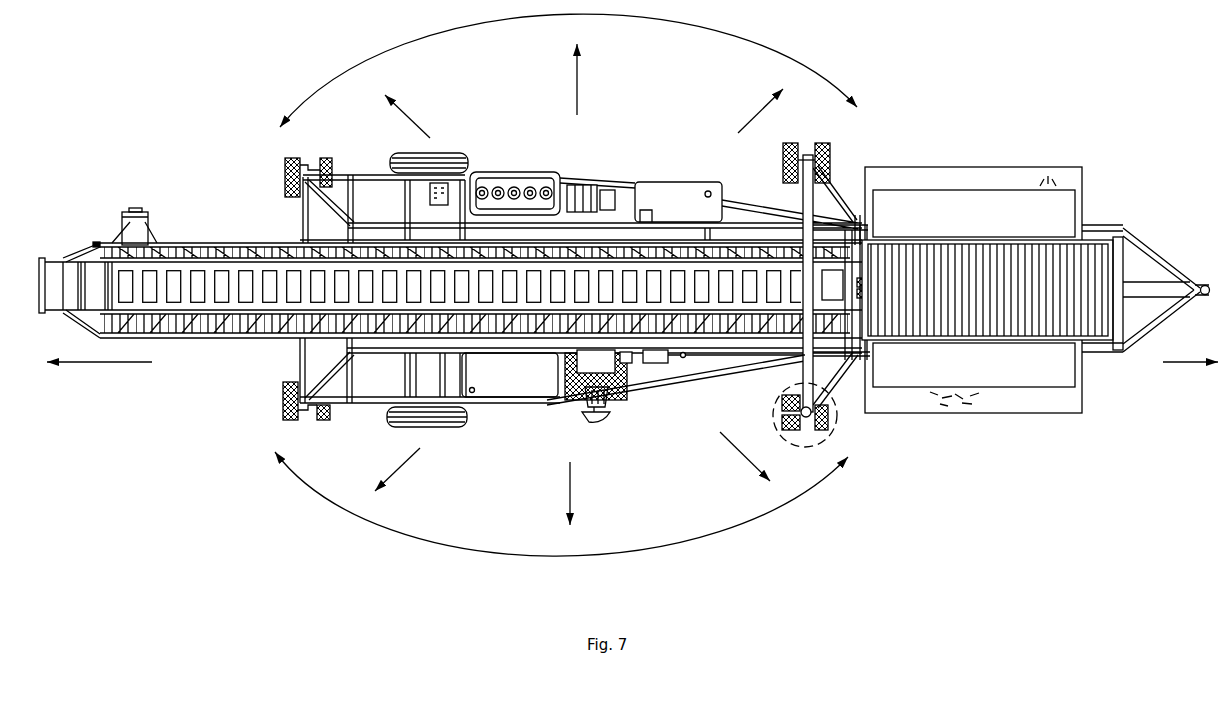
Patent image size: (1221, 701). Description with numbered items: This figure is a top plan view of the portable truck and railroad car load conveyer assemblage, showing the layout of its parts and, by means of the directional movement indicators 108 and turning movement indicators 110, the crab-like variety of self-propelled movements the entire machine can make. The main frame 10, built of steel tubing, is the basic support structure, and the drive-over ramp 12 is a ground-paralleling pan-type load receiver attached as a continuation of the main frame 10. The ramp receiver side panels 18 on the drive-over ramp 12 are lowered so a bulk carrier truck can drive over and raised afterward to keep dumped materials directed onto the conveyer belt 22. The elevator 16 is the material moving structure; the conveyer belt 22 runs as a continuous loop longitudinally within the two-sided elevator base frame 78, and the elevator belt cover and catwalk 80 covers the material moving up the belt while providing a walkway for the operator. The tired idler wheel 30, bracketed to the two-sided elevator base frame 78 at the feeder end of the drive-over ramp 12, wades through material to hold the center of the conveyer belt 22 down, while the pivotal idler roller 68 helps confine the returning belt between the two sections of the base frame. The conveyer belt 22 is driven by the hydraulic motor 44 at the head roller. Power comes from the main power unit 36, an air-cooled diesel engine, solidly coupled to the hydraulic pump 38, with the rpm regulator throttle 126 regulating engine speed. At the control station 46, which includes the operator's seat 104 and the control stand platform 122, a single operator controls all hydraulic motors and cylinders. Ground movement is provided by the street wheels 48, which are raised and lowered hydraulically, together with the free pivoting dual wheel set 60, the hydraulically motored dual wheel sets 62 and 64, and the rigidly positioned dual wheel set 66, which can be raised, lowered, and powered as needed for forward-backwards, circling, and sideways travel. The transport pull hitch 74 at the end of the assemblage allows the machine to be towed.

The main frame 10 is at (668, 192).
The drive-over ramp 12 is at (928, 178).
The elevator 16 is at (255, 236).
The ramp receiver side panels 18 is at (1035, 210).
The conveyer belt 22 is at (1055, 277).
The tired idler wheel 30 is at (868, 287).
The main power unit, internal combustion engine 36 is at (520, 182).
The hydraulic pump 38 is at (580, 195).
The hydraulic motor 44 is at (133, 225).
The control station 46 is at (612, 393).
The street wheels 48 is at (455, 160).
The free pivoting dual wheel set 60 is at (812, 447).
The hydraulically motored dual wheel set 62 is at (827, 143).
The hydraulically motored dual wheel set 64 is at (326, 157).
The rigidly positioned dual wheel set 66 is at (326, 420).
The pivotal idler roller 68 is at (1127, 328).
The transport pull hitch 74 is at (1203, 286).
The two-sided elevator base frame 78 is at (213, 243).
The elevator belt cover and catwalk 80 is at (97, 242).
The operator's seat 104 is at (596, 425).
The directional movement indicators 108 is at (107, 364).
The turning movement indicators 110 is at (526, 556).
The control stand platform 122 is at (565, 405).
The rpm regulator throttle 126 is at (658, 364).